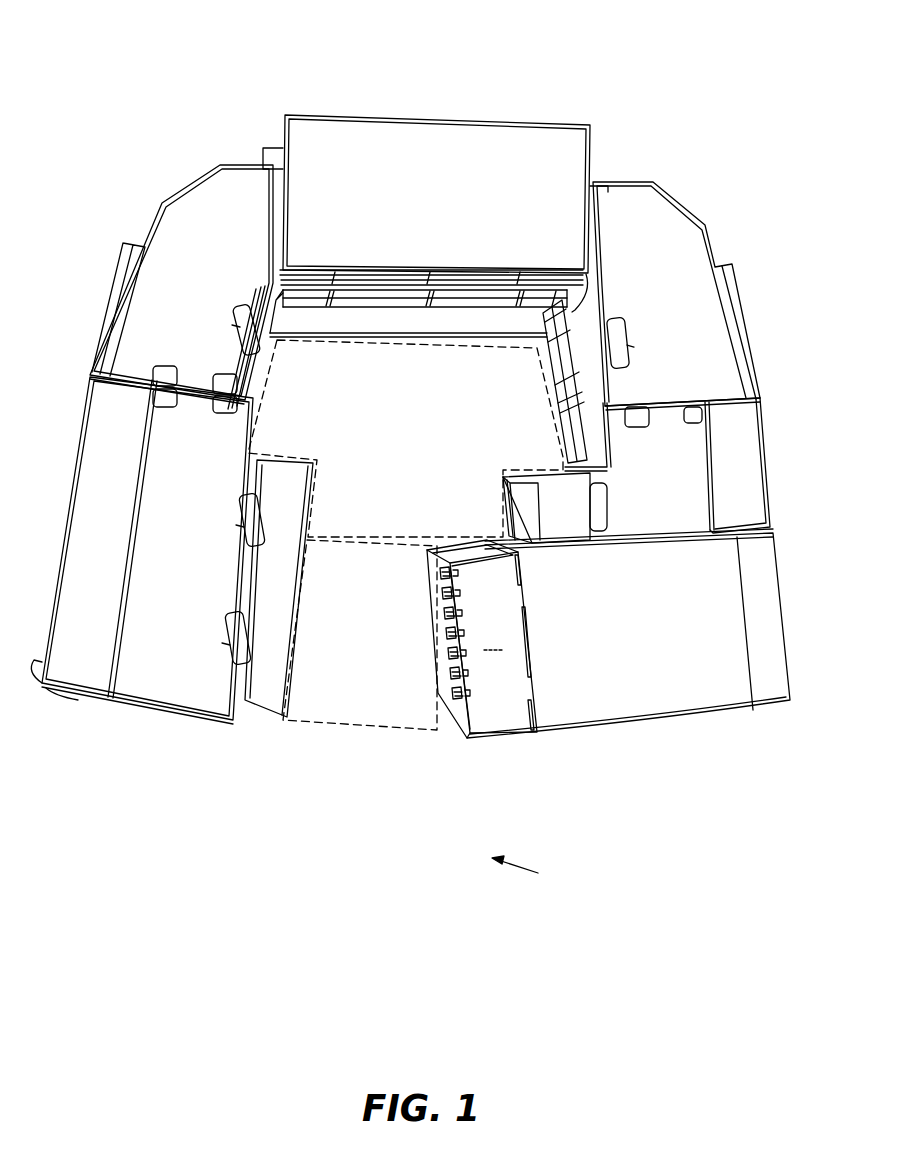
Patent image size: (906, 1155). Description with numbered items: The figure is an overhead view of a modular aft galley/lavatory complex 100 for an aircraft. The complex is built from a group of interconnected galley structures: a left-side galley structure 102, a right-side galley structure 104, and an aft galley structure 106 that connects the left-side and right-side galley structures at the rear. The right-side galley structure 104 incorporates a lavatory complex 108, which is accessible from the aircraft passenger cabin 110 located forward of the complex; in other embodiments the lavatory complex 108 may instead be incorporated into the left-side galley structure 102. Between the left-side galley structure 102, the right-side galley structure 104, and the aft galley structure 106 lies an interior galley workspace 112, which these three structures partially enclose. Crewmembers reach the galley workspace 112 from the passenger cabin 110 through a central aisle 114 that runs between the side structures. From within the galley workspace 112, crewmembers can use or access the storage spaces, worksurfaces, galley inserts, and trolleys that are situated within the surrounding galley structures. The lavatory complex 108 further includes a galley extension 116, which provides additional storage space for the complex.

The modular aft galley/lavatory complex 100 is at (100, 55).
The left-side galley structure 102 is at (103, 412).
The right-side galley structure 104 is at (705, 255).
The aft galley structure 106 is at (441, 137).
The lavatory complex 108 is at (677, 710).
The aircraft passenger cabin 110 is at (533, 873).
The interior galley workspace 112 is at (433, 426).
The central aisle 114 is at (375, 651).
The galley extension 116 is at (505, 725).